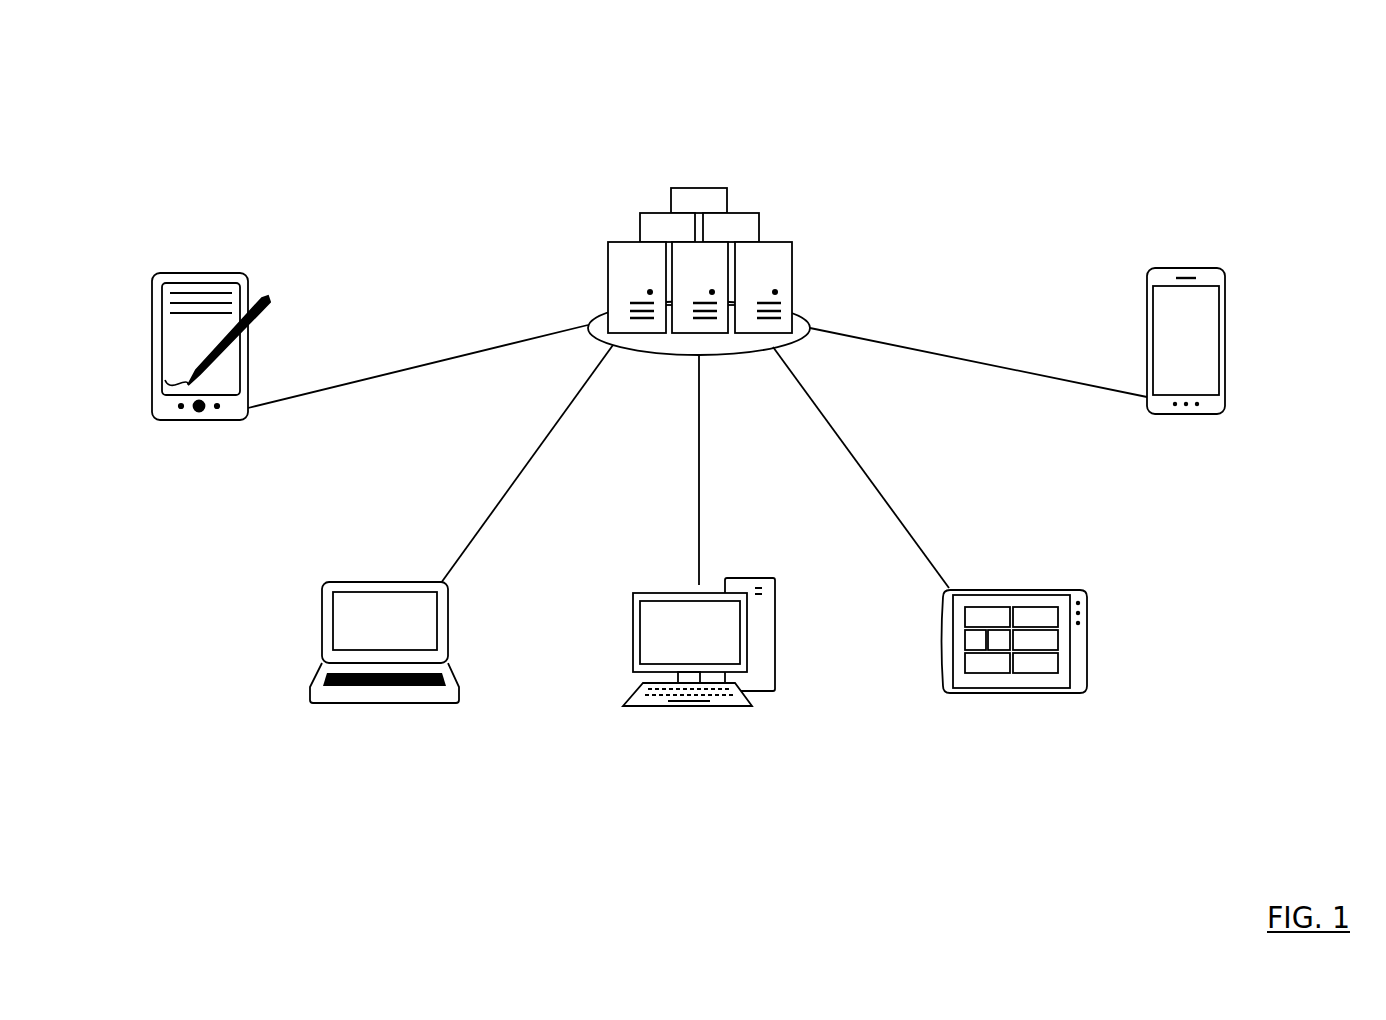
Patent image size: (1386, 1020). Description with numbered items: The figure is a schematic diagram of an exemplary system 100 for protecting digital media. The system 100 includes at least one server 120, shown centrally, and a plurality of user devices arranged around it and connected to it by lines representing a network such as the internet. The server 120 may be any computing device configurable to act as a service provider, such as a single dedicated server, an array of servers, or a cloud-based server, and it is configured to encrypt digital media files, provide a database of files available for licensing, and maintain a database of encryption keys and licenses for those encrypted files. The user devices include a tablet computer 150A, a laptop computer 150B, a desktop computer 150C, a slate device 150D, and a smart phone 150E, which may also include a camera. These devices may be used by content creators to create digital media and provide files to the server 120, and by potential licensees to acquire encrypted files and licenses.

The system 100 is at (720, 38).
The server 120 is at (699, 242).
The tablet computer 150A is at (211, 370).
The laptop computer 150B is at (384, 673).
The desktop computer 150C is at (699, 671).
The slate device 150D is at (1015, 677).
The smart phone 150E is at (1186, 366).